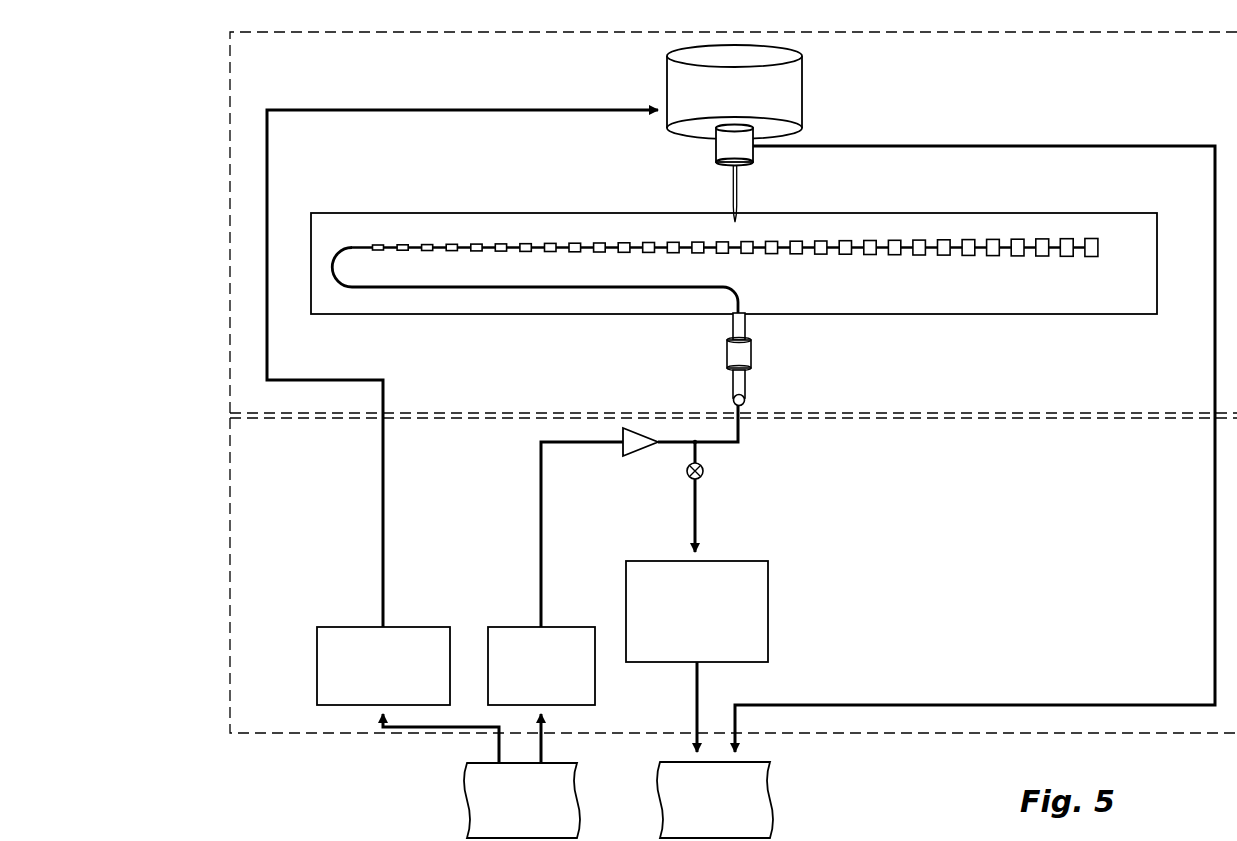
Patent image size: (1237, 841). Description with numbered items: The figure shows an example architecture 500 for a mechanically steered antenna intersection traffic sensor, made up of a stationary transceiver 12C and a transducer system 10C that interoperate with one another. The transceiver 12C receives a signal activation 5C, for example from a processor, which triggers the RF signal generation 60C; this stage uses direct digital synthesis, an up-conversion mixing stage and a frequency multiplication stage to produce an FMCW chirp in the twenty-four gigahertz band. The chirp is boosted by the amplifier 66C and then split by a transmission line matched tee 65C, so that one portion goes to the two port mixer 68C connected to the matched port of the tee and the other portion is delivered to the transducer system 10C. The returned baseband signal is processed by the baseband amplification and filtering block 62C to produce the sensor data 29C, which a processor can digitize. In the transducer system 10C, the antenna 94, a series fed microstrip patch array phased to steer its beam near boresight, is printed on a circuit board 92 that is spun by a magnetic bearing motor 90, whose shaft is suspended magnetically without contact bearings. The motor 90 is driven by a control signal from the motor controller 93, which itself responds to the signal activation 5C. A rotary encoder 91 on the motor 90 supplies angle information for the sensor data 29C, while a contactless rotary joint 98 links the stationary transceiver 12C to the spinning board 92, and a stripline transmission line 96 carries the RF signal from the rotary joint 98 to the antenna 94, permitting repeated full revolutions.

The architecture 500 is at (186, 285).
The transducer system 10C is at (733, 222).
The transceiver 12C is at (733, 575).
The motor 90 is at (804, 92).
The rotary encoder 91 is at (715, 153).
The circuit board 92 is at (935, 213).
The antenna 94 is at (915, 257).
The stripline transmission line 96 is at (668, 287).
The rotary joint 98 is at (727, 356).
The tee 65C is at (695, 441).
The amplifier 66C is at (641, 457).
The mixer 68C is at (703, 472).
The baseband amplification and filtering block 62C is at (697, 611).
The motor controller 93 is at (383, 666).
The RF signal generation 60C is at (541, 666).
The signal activation 5C is at (522, 800).
The sensor data 29C is at (715, 800).